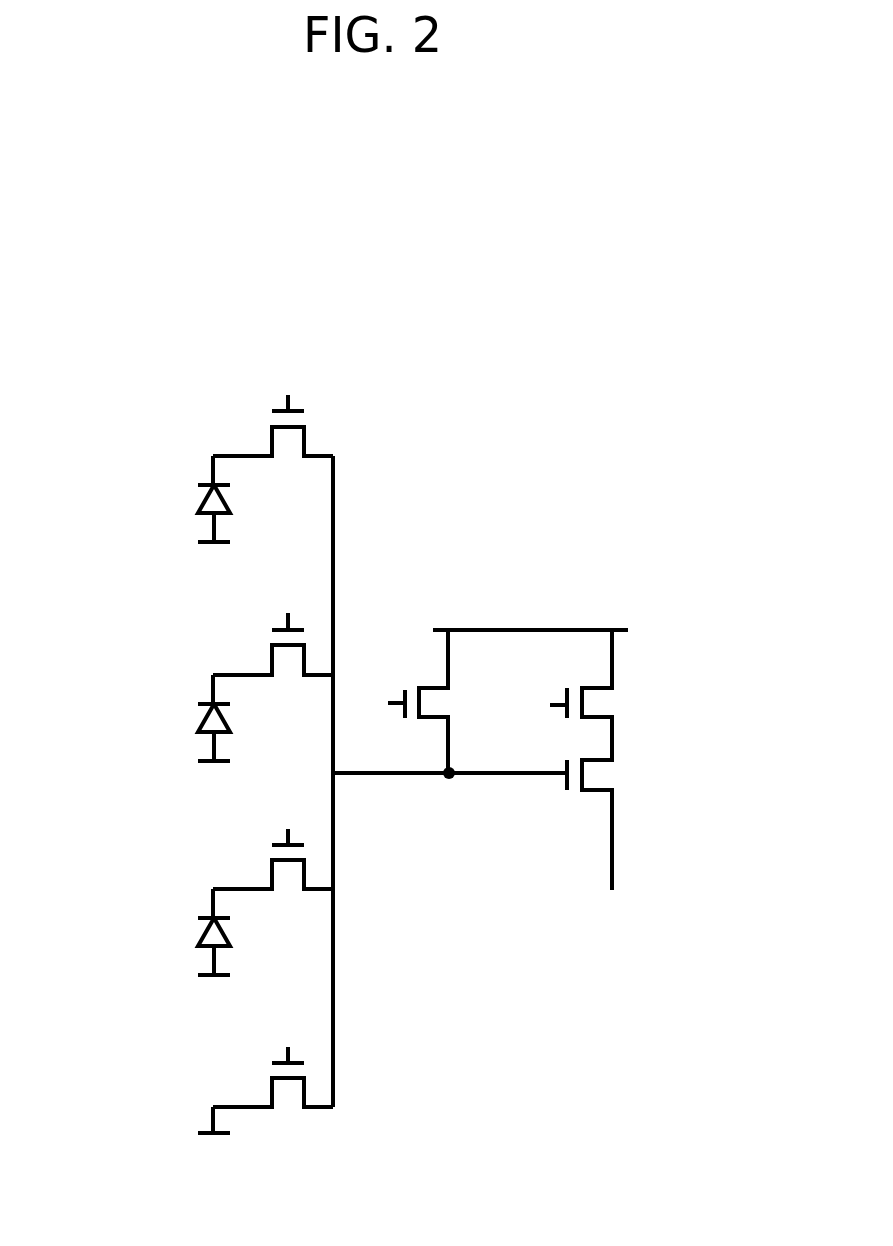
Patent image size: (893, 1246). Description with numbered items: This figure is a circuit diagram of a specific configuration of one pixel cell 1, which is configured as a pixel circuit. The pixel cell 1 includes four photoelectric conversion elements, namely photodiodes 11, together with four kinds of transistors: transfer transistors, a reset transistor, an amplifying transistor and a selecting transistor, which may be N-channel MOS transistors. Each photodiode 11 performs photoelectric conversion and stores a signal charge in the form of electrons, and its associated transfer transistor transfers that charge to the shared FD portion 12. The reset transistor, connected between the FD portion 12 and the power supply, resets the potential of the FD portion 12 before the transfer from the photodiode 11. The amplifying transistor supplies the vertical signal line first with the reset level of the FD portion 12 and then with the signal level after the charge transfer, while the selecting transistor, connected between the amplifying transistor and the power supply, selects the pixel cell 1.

The pixel cell 1 is at (445, 381).
The photodiode 11 is at (187, 508).
The FD portion 12 is at (445, 780).